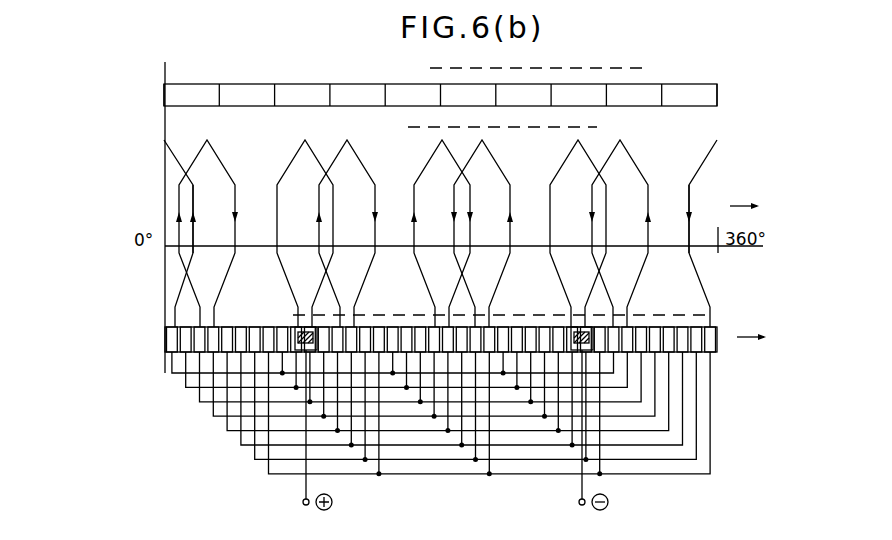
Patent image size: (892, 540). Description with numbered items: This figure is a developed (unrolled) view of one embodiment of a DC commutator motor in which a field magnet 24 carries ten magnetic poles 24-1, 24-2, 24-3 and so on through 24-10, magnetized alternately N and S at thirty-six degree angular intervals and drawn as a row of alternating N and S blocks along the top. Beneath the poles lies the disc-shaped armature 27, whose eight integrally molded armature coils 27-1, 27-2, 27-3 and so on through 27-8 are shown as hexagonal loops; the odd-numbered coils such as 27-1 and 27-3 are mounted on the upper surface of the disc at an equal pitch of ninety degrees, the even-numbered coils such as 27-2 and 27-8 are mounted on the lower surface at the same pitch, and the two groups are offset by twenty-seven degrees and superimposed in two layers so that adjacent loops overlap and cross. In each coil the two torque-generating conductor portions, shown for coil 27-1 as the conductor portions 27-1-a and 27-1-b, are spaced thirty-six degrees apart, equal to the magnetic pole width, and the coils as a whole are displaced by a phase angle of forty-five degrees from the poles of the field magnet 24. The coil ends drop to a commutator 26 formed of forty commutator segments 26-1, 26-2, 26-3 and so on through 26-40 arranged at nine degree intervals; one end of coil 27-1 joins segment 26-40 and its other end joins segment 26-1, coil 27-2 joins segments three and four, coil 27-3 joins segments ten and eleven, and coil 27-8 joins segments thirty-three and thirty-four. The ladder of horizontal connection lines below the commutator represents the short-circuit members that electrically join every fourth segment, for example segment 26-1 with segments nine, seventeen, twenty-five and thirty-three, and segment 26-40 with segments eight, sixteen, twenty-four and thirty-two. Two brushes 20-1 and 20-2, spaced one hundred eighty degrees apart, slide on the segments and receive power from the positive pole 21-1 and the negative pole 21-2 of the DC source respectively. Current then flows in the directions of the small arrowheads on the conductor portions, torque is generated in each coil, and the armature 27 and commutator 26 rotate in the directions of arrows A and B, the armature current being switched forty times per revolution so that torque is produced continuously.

The field magnet 24 is at (471, 82).
The magnetic pole 24-1 is at (178, 86).
The magnetic pole 24-2 is at (257, 88).
The magnetic pole 24-3 is at (323, 92).
The magnetic pole 24-10 is at (670, 90).
The armature 27 is at (458, 222).
The armature coil 27-1 is at (177, 147).
The conductor portion 27-1-a is at (690, 188).
The conductor portion 27-1-b is at (193, 192).
The armature coil 27-2 is at (217, 150).
The armature coil 27-3 is at (307, 152).
The armature coil 27-8 is at (620, 140).
The direction of rotation arrow A is at (742, 205).
The direction of rotation arrow B is at (752, 341).
The commutator 26 is at (436, 389).
The commutator segment 26-1 is at (172, 338).
The commutator segment 26-2 is at (182, 332).
The commutator segment 26-3 is at (202, 333).
The commutator segment 26-40 is at (712, 333).
The brush 20-1 is at (292, 328).
The brush 20-2 is at (569, 328).
The positive pole 21-1 is at (302, 503).
The negative pole 21-2 is at (578, 503).